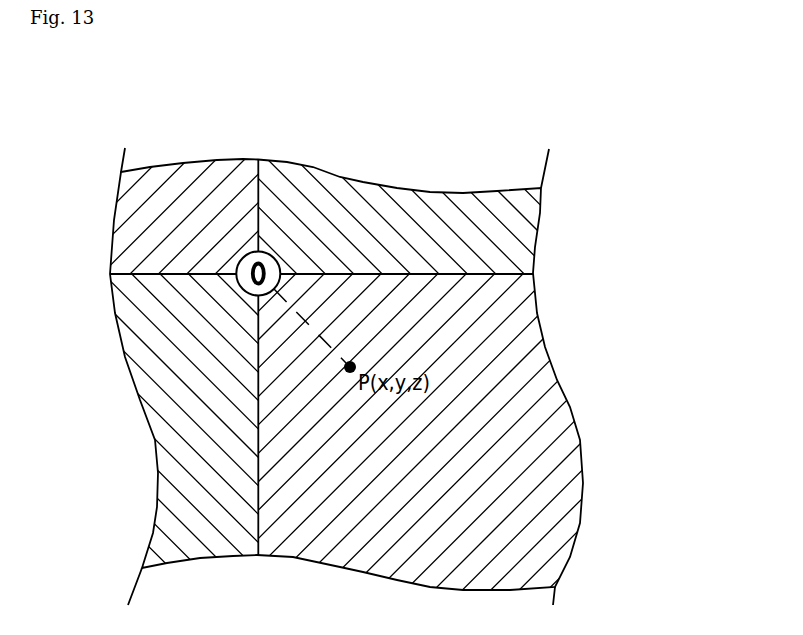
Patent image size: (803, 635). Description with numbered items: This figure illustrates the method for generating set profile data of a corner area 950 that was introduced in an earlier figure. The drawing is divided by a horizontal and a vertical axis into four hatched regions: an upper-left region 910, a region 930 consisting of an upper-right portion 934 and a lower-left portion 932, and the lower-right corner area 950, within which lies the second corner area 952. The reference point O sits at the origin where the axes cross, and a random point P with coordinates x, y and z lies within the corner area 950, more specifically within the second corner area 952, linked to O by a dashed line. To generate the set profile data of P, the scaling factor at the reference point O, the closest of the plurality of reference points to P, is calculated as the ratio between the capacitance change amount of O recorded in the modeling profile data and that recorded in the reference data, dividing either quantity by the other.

The first quadrant region of coordinate plane 910 is at (203, 193).
The second region of coordinate plane 930 is at (401, 317).
The upper second region 934 is at (393, 218).
The lower second region 932 is at (162, 402).
The corner area 950 is at (401, 317).
The second corner area 952 is at (542, 380).